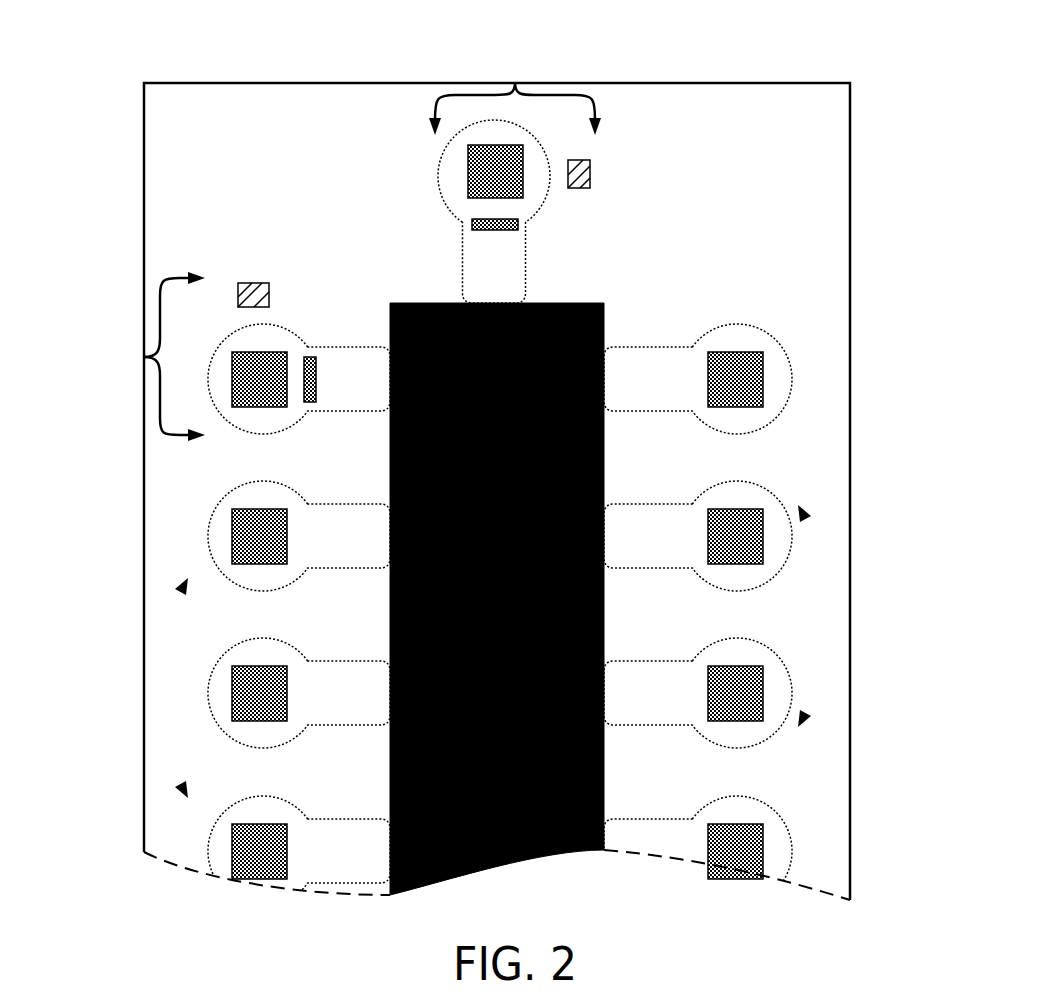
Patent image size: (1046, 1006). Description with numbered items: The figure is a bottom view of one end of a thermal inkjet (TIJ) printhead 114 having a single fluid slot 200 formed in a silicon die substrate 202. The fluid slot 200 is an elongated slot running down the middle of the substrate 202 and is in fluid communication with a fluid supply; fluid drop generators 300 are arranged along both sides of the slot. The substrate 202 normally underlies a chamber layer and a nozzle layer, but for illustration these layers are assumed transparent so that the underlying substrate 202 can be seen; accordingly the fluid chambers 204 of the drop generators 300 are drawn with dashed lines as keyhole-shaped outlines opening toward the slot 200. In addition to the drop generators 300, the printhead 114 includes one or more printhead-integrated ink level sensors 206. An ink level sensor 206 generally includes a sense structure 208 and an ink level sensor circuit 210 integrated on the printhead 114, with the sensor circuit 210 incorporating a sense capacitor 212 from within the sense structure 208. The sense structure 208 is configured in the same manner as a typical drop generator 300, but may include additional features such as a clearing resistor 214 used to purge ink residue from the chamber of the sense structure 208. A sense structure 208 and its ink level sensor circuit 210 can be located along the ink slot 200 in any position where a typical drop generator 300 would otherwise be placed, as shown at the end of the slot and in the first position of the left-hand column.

The TIJ printhead 114 is at (170, 40).
The fluid slot 200 is at (604, 330).
The silicon die substrate 202 is at (144, 120).
The fluid chambers 204 is at (707, 500).
The ink level sensor 206 is at (515, 83).
The sense structure 208 is at (540, 210).
The ink level sensor circuit 210 is at (585, 170).
The sense capacitor 212 is at (478, 180).
The clearing resistor 214 is at (475, 226).
The fluid drop generators 300 is at (798, 727).